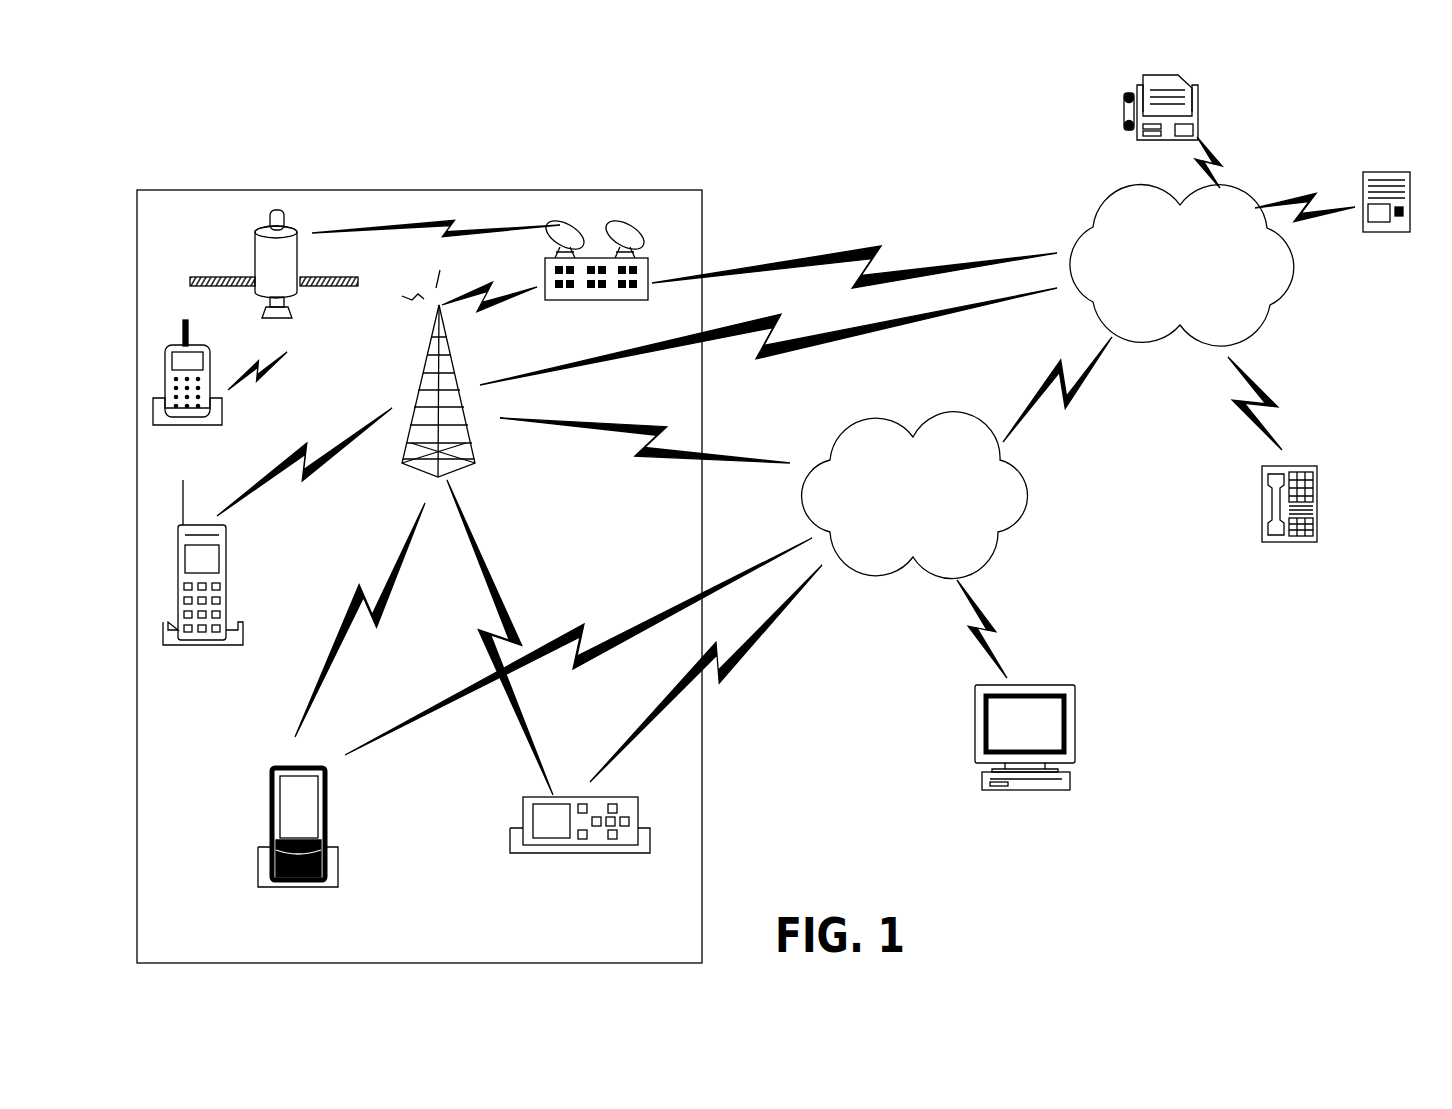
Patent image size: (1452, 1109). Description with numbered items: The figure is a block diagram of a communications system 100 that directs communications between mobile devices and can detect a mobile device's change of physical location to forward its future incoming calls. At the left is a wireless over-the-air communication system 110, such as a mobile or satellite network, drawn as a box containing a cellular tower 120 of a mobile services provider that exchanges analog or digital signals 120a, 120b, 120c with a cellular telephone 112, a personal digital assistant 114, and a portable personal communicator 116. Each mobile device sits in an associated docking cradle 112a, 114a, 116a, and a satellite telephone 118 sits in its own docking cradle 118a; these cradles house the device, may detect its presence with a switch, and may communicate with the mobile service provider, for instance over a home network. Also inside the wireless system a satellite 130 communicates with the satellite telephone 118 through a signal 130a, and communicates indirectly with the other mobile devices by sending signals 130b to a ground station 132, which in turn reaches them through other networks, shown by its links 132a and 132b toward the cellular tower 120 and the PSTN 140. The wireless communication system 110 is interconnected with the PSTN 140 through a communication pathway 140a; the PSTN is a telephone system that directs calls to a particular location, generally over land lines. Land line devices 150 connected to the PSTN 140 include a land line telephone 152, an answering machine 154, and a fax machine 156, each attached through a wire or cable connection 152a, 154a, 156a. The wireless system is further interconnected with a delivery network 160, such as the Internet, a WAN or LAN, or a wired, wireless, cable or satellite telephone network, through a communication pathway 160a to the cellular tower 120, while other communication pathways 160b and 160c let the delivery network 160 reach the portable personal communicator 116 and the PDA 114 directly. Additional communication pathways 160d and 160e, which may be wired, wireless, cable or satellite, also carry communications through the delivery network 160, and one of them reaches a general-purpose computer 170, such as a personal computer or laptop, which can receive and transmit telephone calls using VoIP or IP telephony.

The communications system 100 is at (675, 130).
The wireless over-the-air communication system 110 is at (312, 175).
The cellular telephone 112 is at (226, 560).
The docking cradle 112a is at (243, 640).
The personal digital assistant 114 is at (298, 768).
The docking cradle 114a is at (338, 862).
The portable personal communicator 116 is at (637, 797).
The docking cradle 116a is at (510, 835).
The satellite telephone 118 is at (165, 350).
The docking cradle 118a is at (222, 425).
The cellular tower 120 is at (428, 348).
The analog or digital signal 120a is at (282, 478).
The analog or digital signal 120b is at (390, 578).
The analog or digital signal 120c is at (478, 548).
The satellite 130 is at (255, 265).
The signal 130a is at (250, 372).
The signals 130b is at (520, 228).
The ground station 132 is at (648, 275).
The link between ground station and tower 132a is at (497, 282).
The link between ground station and PSTN 132b is at (920, 265).
The PSTN 140 is at (1280, 305).
The communication pathway 140a is at (855, 318).
The devices 150 is at (1335, 600).
The land line telephone 152 is at (1262, 503).
The wire or cable connection 152a is at (1272, 398).
The answering machine 154 is at (1392, 172).
The wire or cable connection 154a is at (1318, 205).
The fax machine 156 is at (1198, 113).
The wire or cable connection 156a is at (1218, 160).
The delivery network 160 is at (1033, 497).
The communication pathway 160a is at (714, 455).
The communication pathway 160b is at (670, 690).
The communication pathway 160c is at (650, 610).
The communication pathway 160d is at (972, 602).
The communication pathway 160e is at (1043, 385).
The general-purpose computer 170 is at (1075, 720).